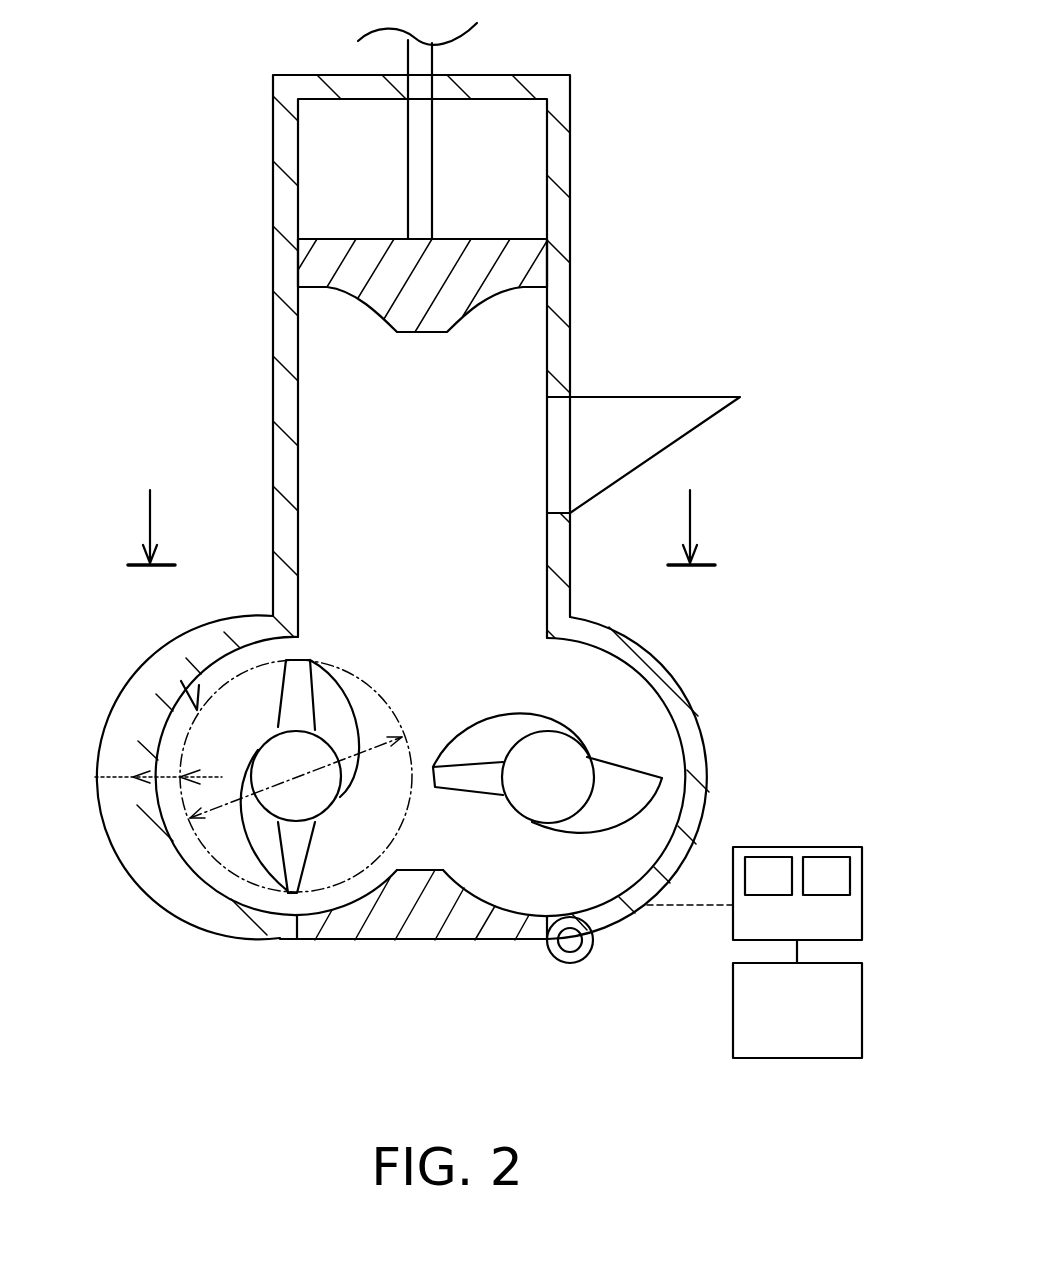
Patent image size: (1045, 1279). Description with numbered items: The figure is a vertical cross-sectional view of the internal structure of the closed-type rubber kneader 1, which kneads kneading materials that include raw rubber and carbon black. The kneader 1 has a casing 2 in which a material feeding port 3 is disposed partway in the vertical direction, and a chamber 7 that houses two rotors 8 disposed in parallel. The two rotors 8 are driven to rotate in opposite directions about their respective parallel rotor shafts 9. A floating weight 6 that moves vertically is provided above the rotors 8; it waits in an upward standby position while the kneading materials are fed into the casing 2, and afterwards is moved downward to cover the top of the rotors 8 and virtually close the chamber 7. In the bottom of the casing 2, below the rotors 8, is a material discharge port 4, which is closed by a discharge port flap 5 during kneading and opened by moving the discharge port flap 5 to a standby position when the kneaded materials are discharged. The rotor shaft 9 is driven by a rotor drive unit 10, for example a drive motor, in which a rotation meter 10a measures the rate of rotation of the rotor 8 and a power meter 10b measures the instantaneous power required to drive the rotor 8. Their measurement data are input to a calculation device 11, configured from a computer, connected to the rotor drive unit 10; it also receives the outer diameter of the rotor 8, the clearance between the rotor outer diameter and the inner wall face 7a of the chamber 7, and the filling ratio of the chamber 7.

The closed-type rubber kneader 1 is at (602, 194).
The casing 2 is at (290, 472).
The material feeding port 3 is at (640, 406).
The material discharge port 4 is at (305, 940).
The discharge port flap 5 is at (382, 930).
The floating weight 6 is at (455, 246).
The chamber 7 is at (627, 698).
The inner wall face 7a is at (182, 690).
The rotor 8 is at (228, 853).
The rotor shaft 9 is at (317, 800).
The rotor drive unit 10 is at (806, 836).
The rotation meter 10a is at (766, 866).
The power meter 10b is at (827, 866).
The calculation device 11 is at (799, 1048).